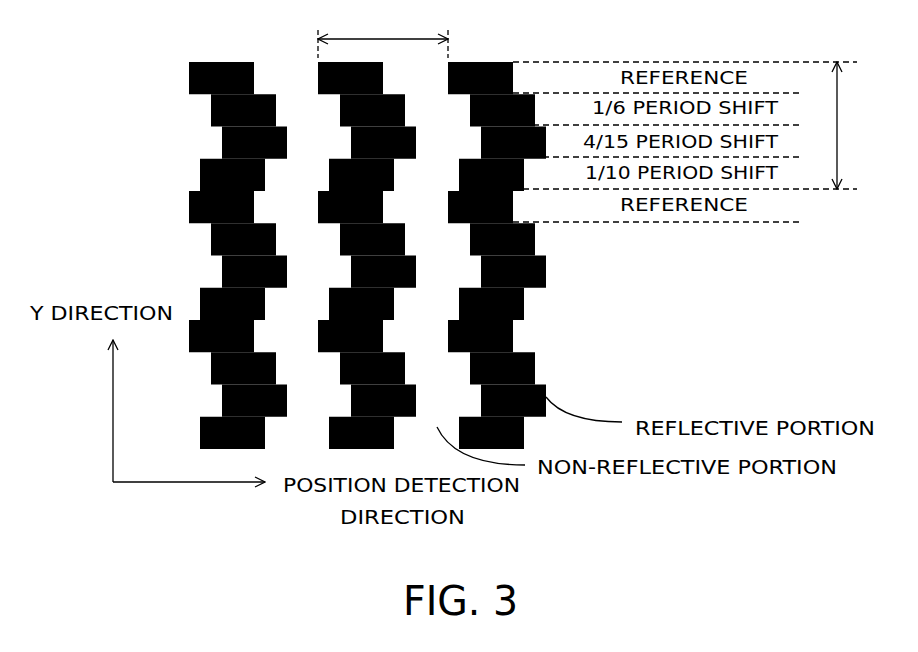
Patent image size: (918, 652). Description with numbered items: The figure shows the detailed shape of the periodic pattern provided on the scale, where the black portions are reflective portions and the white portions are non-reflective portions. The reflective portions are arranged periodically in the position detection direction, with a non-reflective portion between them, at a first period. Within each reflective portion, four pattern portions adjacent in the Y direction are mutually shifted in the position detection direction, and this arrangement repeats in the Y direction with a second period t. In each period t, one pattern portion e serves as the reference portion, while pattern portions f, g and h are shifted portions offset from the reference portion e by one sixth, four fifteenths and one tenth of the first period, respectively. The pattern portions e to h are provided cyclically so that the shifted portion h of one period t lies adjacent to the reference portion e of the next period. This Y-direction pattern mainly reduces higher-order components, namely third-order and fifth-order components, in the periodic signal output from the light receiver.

The reference portion e is at (189, 75).
The shifted portion f is at (211, 110).
The shifted portion g is at (222, 143).
The shifted portion h is at (200, 168).
The second period t is at (855, 125).